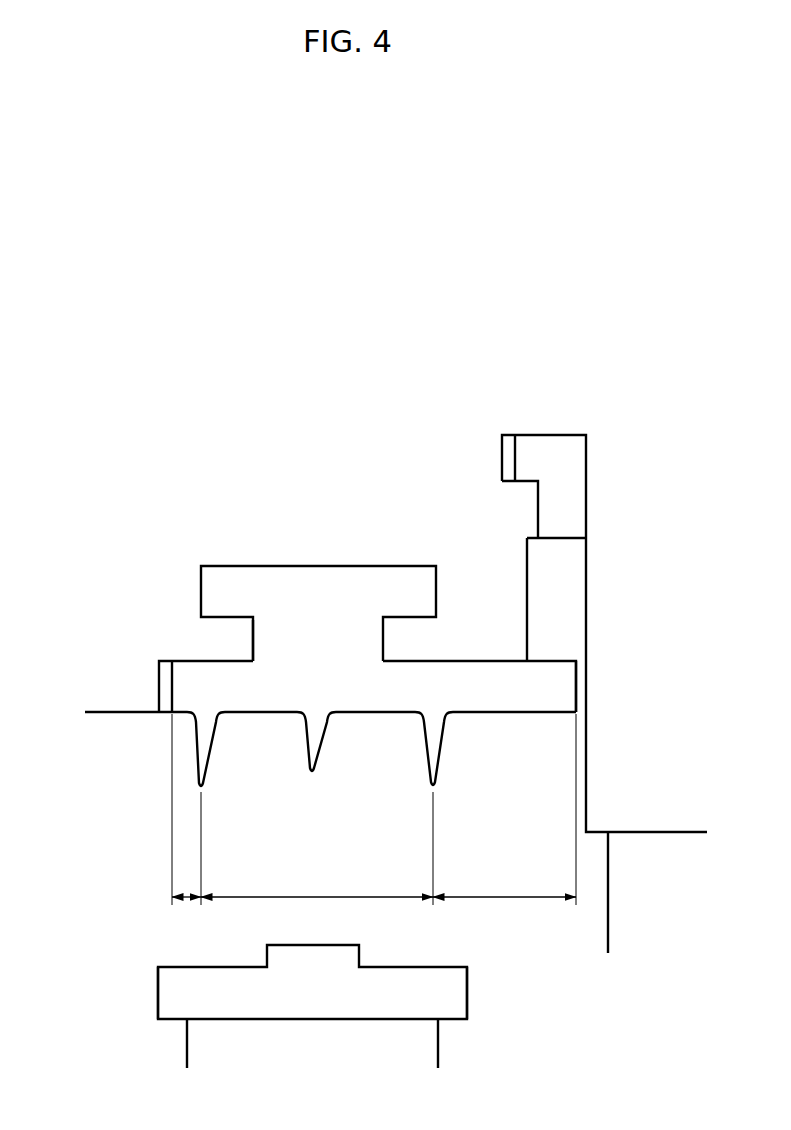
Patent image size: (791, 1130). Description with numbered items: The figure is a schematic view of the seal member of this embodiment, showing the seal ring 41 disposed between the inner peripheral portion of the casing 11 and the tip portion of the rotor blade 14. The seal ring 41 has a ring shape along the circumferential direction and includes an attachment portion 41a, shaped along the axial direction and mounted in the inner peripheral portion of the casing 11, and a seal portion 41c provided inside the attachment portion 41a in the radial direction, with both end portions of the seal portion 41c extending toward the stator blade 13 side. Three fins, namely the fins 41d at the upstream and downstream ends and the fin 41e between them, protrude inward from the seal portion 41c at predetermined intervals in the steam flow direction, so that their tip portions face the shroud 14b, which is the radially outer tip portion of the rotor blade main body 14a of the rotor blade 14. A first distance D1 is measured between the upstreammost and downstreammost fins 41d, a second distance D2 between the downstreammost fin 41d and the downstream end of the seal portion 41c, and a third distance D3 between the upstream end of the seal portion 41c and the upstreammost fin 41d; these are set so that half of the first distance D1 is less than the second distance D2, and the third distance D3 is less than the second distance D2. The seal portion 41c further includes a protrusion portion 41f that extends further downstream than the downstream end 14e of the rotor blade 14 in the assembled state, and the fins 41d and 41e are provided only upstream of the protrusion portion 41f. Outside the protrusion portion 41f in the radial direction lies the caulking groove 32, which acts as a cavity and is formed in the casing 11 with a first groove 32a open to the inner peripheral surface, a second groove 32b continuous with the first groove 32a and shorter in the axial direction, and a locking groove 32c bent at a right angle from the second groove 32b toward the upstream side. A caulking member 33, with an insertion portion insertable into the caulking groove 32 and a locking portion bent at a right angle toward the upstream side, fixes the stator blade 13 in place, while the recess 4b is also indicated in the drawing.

The casing 11 is at (401, 461).
The stator blade 13 is at (606, 914).
The rotor blade 14 is at (311, 1018).
The rotor blade main body 14a is at (334, 1072).
The shroud 14b is at (165, 990).
The downstream end of the rotor blade 14e is at (460, 990).
The caulking groove 32 is at (583, 576).
The first groove 32a is at (527, 603).
The second groove 32b is at (542, 500).
The locking groove 32c is at (506, 462).
The caulking member 33 is at (559, 537).
The seal ring 41 is at (353, 632).
The attachment portion 41a is at (216, 587).
The seal portion 41c is at (338, 672).
The fin 41d is at (200, 764).
The fin 41e is at (313, 760).
The protrusion portion 41f is at (563, 689).
The recess 4b is at (273, 632).
The first distance D1 is at (317, 848).
The second distance D2 is at (504, 809).
The third distance D3 is at (185, 893).